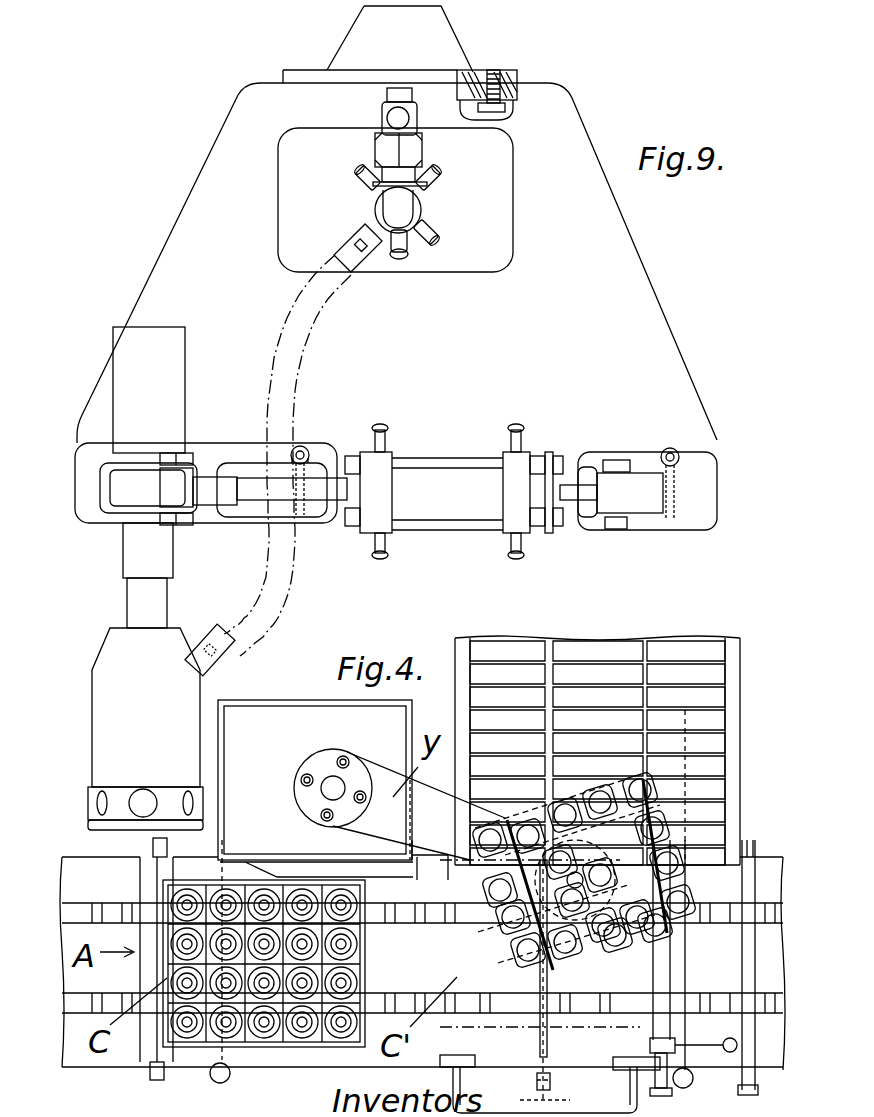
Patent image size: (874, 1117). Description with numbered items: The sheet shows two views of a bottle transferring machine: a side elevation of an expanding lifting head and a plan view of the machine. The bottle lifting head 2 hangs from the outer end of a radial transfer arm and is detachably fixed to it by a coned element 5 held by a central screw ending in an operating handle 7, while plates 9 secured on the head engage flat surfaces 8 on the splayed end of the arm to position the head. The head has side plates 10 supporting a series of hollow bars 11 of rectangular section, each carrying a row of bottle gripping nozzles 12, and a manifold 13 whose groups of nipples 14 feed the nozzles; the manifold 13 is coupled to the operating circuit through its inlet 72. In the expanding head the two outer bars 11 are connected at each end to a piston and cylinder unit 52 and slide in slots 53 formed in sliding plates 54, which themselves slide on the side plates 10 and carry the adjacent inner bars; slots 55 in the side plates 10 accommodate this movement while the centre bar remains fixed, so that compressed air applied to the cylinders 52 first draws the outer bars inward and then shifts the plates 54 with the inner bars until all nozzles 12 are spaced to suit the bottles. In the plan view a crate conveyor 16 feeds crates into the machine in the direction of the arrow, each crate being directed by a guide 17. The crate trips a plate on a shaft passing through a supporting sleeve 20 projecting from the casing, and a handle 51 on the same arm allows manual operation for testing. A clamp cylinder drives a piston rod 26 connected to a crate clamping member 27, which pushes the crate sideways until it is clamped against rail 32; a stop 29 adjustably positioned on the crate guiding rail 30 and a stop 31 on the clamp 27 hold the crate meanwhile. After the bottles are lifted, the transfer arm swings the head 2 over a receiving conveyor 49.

In FIG. 9, the bottle lifting head 2 is at (520, 87).
In FIG. 4, the bottle lifting head 2 is at (645, 935).
In FIG. 9, the coned element 5 is at (473, 72).
In FIG. 4, the operating handle 7 is at (690, 888).
In FIG. 4, the flat surfaces 8 is at (490, 888).
In FIG. 4, the plates 9 is at (625, 945).
In FIG. 4, the side plates 10 is at (488, 830).
In FIG. 9, the hollow bars 11 is at (130, 507).
In FIG. 4, the hollow bars 11 is at (680, 860).
In FIG. 4, the bottle gripping nozzles 12 is at (510, 945).
In FIG. 9, the manifold 13 is at (375, 203).
In FIG. 9, the nipples 14 is at (362, 170).
In FIG. 4, the crate conveyor 16 is at (150, 1010).
In FIG. 4, the guide 17 is at (303, 877).
In FIG. 4, the supporting sleeve 20 is at (662, 980).
In FIG. 4, the piston rod 26 is at (540, 1025).
In FIG. 4, the crate clamping member 27 is at (507, 1093).
In FIG. 4, the stop 29 is at (683, 1088).
In FIG. 4, the crate guiding rail 30 is at (255, 1078).
In FIG. 4, the stop 31 is at (653, 1042).
In FIG. 4, the rail 32 is at (437, 860).
In FIG. 4, the receiving conveyor 49 is at (617, 668).
In FIG. 4, the handle 51 is at (703, 1047).
In FIG. 9, the piston and cylinder unit 52 is at (454, 491).
In FIG. 9, the slots 53 is at (203, 507).
In FIG. 9, the sliding plates 54 is at (225, 452).
In FIG. 9, the slots 55 is at (330, 513).
In FIG. 9, the inlet 72 is at (400, 100).